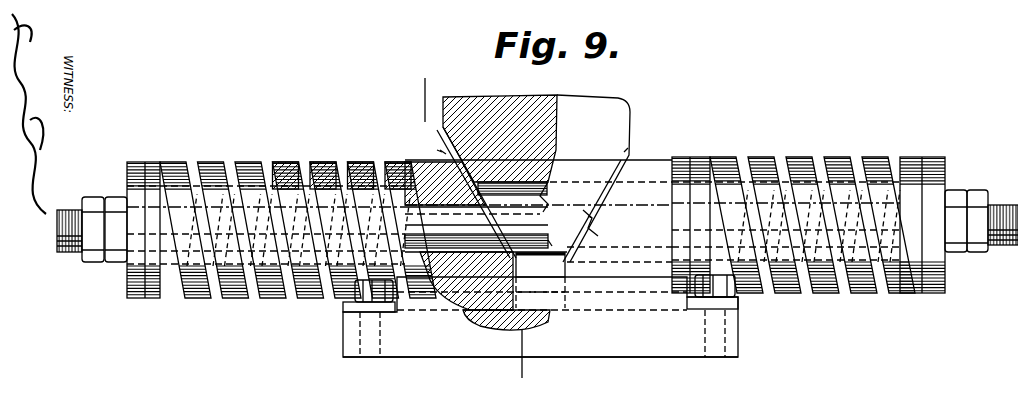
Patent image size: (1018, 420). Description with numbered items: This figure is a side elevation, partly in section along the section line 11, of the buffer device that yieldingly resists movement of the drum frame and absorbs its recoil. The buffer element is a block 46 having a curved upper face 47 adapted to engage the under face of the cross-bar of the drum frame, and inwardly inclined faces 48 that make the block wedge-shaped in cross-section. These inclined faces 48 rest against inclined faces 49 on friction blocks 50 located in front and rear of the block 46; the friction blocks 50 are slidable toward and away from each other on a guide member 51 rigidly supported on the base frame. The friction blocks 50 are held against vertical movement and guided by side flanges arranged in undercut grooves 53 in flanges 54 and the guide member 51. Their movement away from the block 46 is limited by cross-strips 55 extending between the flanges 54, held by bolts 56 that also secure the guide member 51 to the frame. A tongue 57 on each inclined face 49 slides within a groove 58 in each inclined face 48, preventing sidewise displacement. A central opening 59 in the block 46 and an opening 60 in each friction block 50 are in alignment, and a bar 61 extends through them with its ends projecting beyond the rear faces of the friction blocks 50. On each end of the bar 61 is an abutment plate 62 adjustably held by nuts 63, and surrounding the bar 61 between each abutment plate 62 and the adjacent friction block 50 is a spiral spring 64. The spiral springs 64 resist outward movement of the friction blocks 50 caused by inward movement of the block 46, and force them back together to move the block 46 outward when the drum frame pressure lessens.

The section line 11 is at (424, 93).
The block 46 is at (595, 112).
The curved upper face 47 is at (498, 103).
The inclined faces 48 is at (437, 150).
The inclined faces 49 is at (432, 170).
The friction blocks 50 is at (462, 303).
The guide member 51 is at (577, 345).
The undercut grooves 53 is at (535, 305).
The flanges 54 is at (623, 287).
The cross-strips 55 is at (345, 308).
The bolts 56 is at (366, 302).
The tongue 57 is at (524, 199).
The groove 58 is at (440, 148).
The central opening 59 is at (548, 224).
The opening 60 is at (437, 210).
The bar 61 is at (540, 280).
The abutment plate 62 is at (130, 298).
The nuts 63 is at (118, 261).
The spiral spring 64 is at (295, 162).